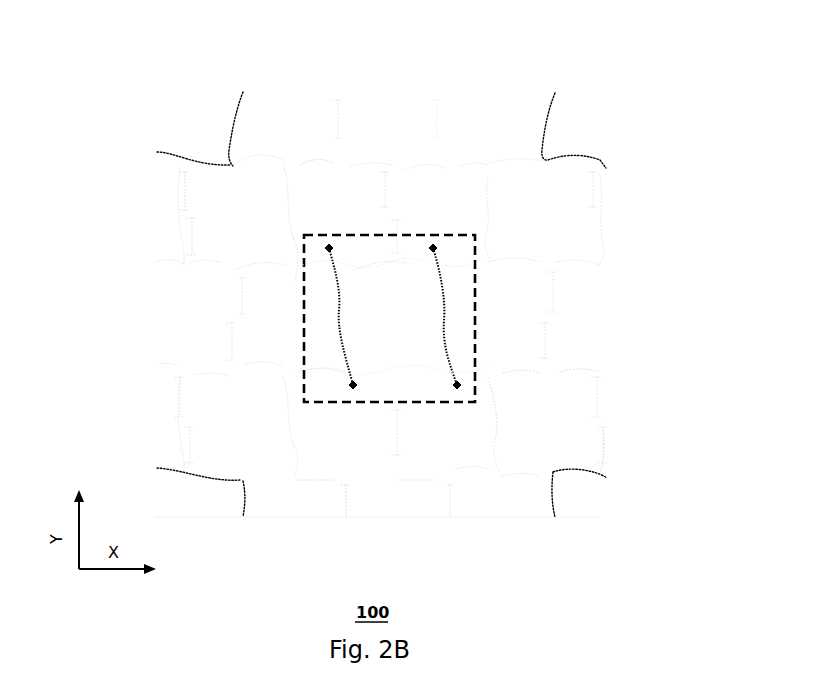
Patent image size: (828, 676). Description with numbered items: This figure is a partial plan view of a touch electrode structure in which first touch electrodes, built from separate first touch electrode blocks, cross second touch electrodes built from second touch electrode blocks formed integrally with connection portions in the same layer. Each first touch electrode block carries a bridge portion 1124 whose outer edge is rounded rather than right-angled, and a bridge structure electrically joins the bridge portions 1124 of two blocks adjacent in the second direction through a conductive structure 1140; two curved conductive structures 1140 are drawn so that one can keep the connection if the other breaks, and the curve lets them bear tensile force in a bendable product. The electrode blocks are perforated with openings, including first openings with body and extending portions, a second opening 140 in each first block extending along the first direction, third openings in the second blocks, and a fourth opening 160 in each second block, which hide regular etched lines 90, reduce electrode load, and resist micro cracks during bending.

The etched lines 90 is at (543, 137).
The conductive structure 1140 is at (445, 330).
The fourth opening 160 is at (577, 360).
The second opening 140 is at (310, 482).
The bridge portion 1124 is at (432, 392).